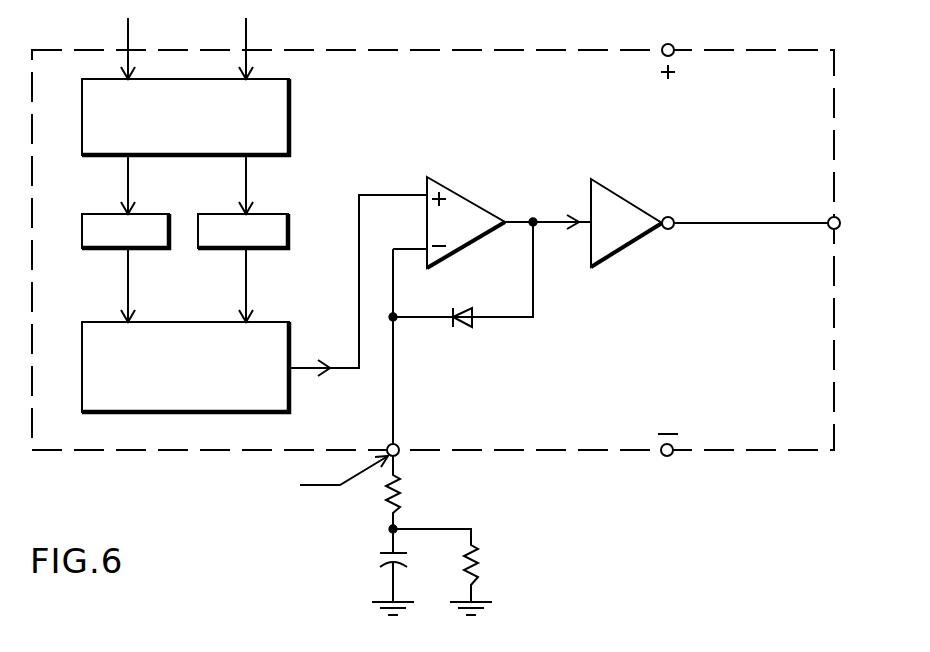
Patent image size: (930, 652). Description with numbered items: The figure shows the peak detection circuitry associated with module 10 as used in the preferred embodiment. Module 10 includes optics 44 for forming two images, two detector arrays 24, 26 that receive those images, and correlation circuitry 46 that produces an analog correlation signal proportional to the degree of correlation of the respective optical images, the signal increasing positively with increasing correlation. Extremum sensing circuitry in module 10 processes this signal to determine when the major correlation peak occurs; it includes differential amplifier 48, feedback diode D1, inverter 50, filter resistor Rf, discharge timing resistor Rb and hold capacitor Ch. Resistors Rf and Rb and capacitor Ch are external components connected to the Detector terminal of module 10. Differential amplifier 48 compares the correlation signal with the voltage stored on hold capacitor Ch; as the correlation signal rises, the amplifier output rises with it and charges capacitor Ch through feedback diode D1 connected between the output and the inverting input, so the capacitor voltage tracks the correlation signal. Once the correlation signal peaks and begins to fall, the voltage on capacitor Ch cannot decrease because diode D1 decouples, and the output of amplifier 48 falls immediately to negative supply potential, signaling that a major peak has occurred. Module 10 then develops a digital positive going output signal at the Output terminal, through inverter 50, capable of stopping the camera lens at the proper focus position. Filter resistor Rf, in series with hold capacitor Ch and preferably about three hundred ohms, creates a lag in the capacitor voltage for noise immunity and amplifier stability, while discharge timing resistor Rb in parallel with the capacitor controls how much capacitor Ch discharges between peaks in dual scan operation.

The module 10 is at (482, 50).
The detector array 24 is at (142, 213).
The detector array 26 is at (268, 213).
The optics 44 is at (289, 113).
The correlation circuitry 46 is at (268, 322).
The differential amplifier 48 is at (461, 192).
The inverter 50 is at (624, 193).
The feedback diode D1 is at (462, 306).
The filter resistor Rf is at (303, 498).
The hold capacitor Ch is at (379, 582).
The discharge timing resistor Rb is at (451, 572).